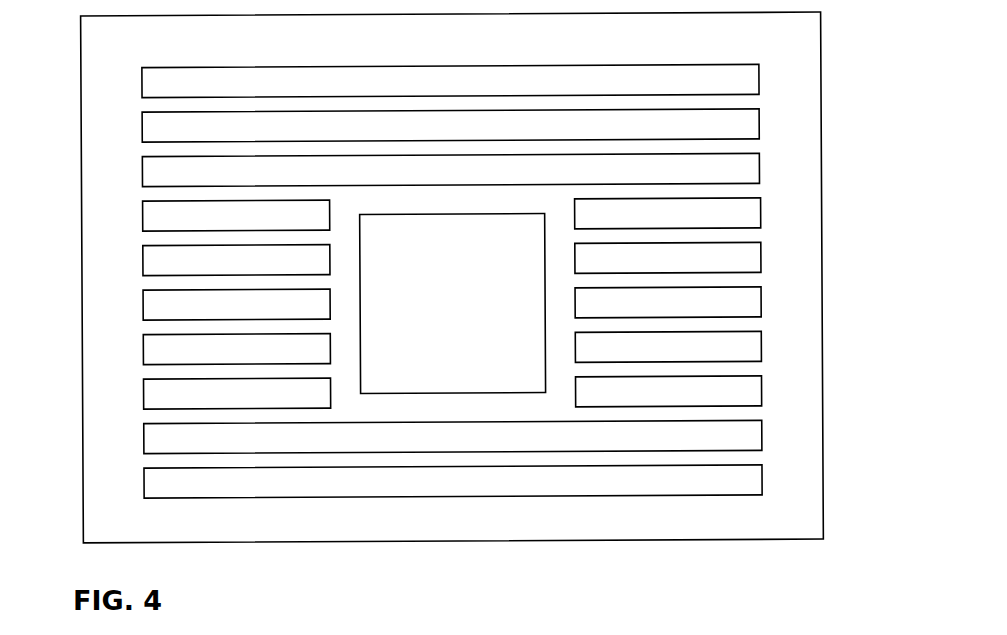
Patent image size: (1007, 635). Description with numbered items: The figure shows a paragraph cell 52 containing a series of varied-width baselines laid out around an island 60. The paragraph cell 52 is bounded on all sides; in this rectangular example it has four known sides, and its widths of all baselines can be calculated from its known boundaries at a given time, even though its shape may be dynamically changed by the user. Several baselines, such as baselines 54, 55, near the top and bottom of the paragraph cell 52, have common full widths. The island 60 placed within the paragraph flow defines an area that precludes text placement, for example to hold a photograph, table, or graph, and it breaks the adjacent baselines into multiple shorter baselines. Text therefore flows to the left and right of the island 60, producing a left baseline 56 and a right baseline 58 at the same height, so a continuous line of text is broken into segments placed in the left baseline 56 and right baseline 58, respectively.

The paragraph cell 52 is at (82, 280).
The baseline 54 is at (760, 78).
The baseline 55 is at (145, 485).
The left baseline 56 is at (143, 216).
The right baseline 58 is at (760, 213).
The island 60 is at (460, 393).